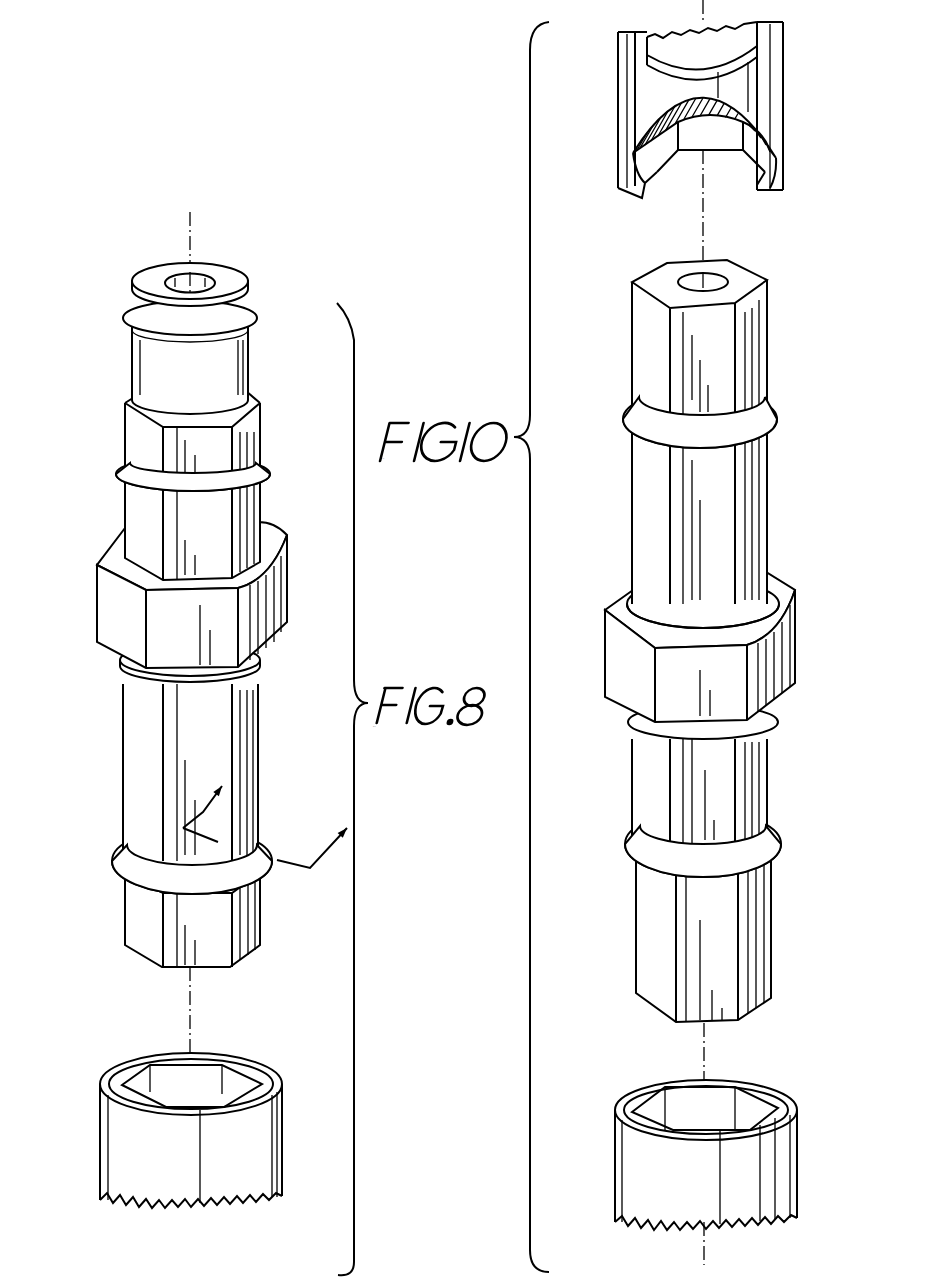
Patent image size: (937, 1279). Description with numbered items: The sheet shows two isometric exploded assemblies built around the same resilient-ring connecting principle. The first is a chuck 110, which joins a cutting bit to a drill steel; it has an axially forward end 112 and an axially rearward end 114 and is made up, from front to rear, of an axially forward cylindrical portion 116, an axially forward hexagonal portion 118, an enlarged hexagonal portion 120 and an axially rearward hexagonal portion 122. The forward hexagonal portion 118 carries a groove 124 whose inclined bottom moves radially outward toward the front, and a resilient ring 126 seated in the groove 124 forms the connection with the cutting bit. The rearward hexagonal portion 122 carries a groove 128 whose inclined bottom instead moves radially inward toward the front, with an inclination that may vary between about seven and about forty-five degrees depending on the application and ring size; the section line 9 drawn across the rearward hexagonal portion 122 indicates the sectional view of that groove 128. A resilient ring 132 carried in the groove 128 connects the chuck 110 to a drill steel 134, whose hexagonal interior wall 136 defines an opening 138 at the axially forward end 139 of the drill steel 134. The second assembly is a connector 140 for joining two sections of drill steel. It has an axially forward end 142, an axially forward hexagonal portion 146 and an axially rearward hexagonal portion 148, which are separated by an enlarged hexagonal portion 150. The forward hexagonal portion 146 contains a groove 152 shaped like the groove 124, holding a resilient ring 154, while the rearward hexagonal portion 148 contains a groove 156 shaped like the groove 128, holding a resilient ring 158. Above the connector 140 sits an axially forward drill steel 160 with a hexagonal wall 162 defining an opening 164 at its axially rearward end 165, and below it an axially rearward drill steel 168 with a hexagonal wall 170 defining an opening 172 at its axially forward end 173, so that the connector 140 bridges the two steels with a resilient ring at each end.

In FIG. 8, the chuck 110 is at (96, 306).
In FIG. 8, the axially forward end 112 is at (158, 276).
In FIG. 8, the axially rearward end 114 is at (142, 957).
In FIG. 8, the axially forward cylindrical portion 116 is at (236, 355).
In FIG. 8, the axially forward hexagonal portion 118 is at (250, 423).
In FIG. 8, the enlarged hexagonal portion 120 is at (276, 582).
In FIG. 8, the axially rearward hexagonal portion 122 is at (134, 755).
In FIG. 8, the groove 124 is at (130, 477).
In FIG. 8, the resilient ring 126 is at (250, 480).
In FIG. 8, the groove 128 is at (150, 887).
In FIG. 8, the resilient ring 132 is at (124, 848).
In FIG. 8, the drill steel 134 is at (120, 1175).
In FIG. 8, the hexagonal interior wall 136 is at (240, 1075).
In FIG. 8, the opening 138 is at (167, 1074).
In FIG. 8, the axially forward end 139 is at (112, 1088).
In FIG. 8, the section line 9- 9 is at (265, 807).
In FIG. 10, the connector 140 is at (856, 448).
In FIG. 10, the axially forward end 142 is at (742, 277).
In FIG. 10, the axially forward hexagonal portion 146 is at (760, 503).
In FIG. 10, the axially rearward hexagonal portion 148 is at (765, 760).
In FIG. 10, the enlarged hexagonal portion 150 is at (790, 630).
In FIG. 10, the groove 152 is at (712, 413).
In FIG. 10, the resilient ring 154 is at (640, 425).
In FIG. 10, the groove 156 is at (715, 878).
In FIG. 10, the resilient ring 158 is at (772, 828).
In FIG. 10, the axially forward drill steel 160 is at (772, 92).
In FIG. 10, the hexagonal wall 162 is at (652, 152).
In FIG. 10, the opening 164 is at (745, 195).
In FIG. 10, the axially rearward end 165 is at (635, 193).
In FIG. 10, the axially rearward drill steel 168 is at (775, 1155).
In FIG. 10, the hexagonal wall 170 is at (753, 1105).
In FIG. 10, the opening 172 is at (675, 1098).
In FIG. 10, the axially forward end 173 is at (635, 1122).